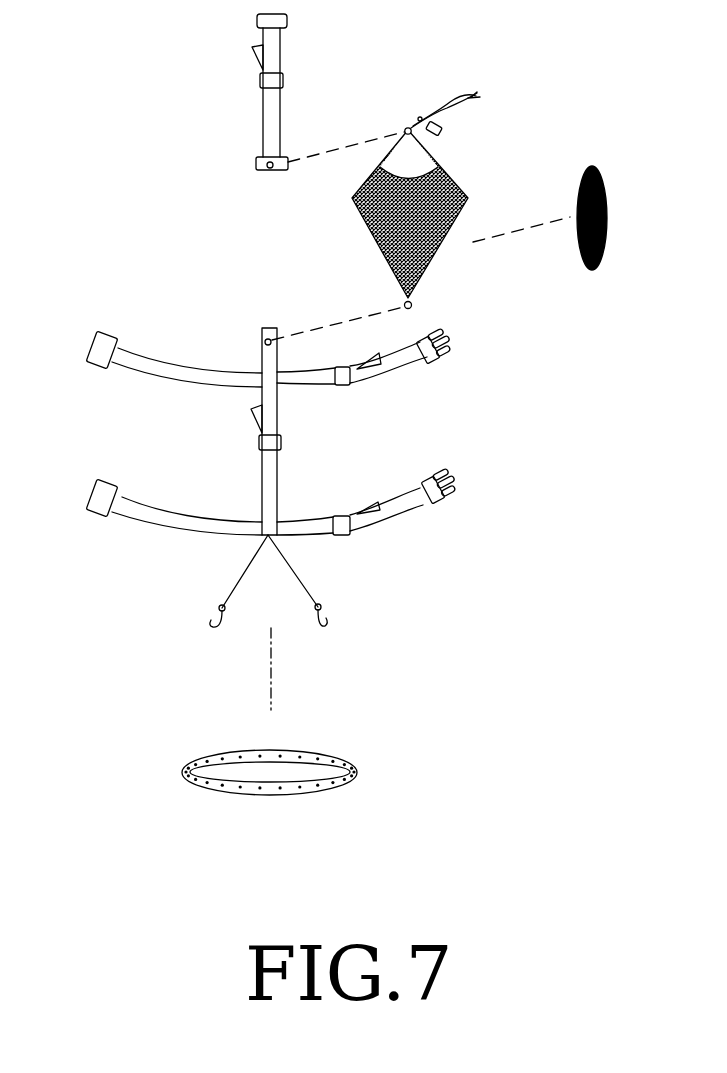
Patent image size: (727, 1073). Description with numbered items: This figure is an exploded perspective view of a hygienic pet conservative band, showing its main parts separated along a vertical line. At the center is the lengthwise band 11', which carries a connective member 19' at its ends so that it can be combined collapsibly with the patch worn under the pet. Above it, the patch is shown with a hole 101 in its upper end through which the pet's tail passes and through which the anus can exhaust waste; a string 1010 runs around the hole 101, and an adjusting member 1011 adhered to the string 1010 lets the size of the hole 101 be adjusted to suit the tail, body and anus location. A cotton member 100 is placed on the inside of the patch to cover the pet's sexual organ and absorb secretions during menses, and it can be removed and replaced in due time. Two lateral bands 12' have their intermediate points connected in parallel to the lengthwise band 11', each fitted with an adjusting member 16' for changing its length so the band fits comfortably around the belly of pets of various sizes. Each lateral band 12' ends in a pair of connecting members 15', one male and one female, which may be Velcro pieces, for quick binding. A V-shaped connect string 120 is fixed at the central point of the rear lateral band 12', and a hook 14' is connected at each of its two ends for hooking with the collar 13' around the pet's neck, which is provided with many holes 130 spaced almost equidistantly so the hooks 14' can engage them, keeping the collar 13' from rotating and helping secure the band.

The lengthwise band 11' is at (242, 274).
The connective member 19' is at (234, 245).
The string 1010 is at (388, 155).
The adjusting member 1011 is at (420, 118).
The hole 101 is at (412, 156).
The cotton member 100 is at (607, 235).
The lateral band 12' is at (269, 451).
The connecting member 15' is at (267, 429).
The adjusting member 16' is at (287, 304).
The V-shaped connect string 120 is at (303, 580).
The hook 14' is at (279, 641).
The collar 13' is at (291, 755).
The holes 130 is at (187, 780).